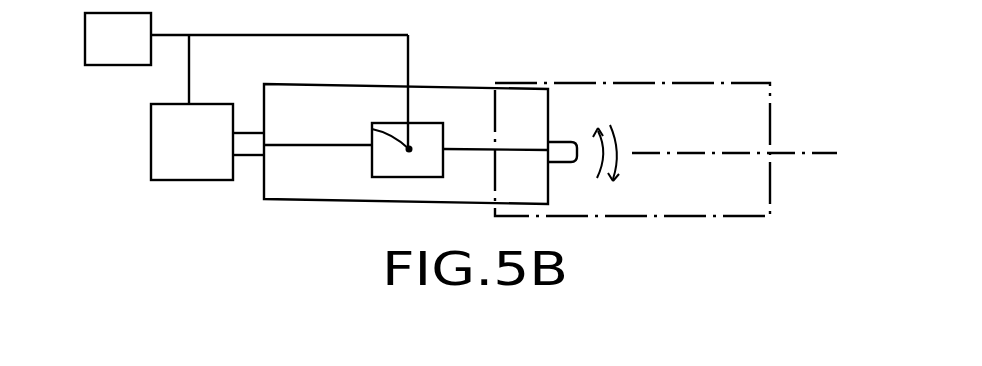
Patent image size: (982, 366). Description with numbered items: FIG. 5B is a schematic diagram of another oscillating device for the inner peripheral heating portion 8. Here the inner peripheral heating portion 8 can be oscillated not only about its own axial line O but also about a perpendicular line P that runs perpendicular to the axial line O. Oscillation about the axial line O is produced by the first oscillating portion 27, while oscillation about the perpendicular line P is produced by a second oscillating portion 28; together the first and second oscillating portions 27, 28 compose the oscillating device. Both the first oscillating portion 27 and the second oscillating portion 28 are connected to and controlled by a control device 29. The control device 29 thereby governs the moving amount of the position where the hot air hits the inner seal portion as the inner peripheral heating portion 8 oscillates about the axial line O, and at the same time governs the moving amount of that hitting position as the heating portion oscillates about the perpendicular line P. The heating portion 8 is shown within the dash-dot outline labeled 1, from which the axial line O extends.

The control device 29 is at (151, 23).
The first oscillating portion 27 is at (151, 118).
The inner peripheral heating portion 8 is at (457, 97).
The second oscillating portion 28 is at (372, 165).
The perpendicular line P is at (372, 129).
The lens barrel 1 is at (772, 101).
The axial line O is at (815, 155).